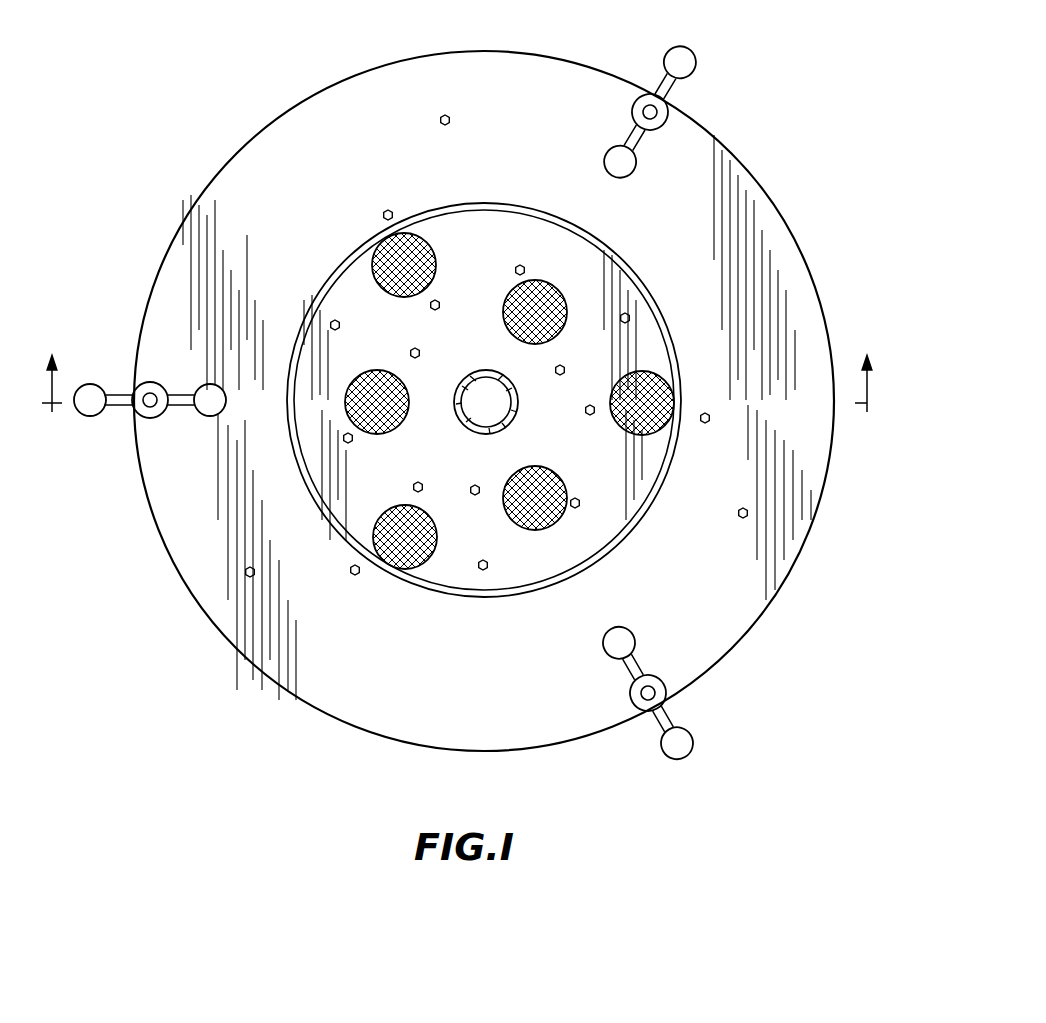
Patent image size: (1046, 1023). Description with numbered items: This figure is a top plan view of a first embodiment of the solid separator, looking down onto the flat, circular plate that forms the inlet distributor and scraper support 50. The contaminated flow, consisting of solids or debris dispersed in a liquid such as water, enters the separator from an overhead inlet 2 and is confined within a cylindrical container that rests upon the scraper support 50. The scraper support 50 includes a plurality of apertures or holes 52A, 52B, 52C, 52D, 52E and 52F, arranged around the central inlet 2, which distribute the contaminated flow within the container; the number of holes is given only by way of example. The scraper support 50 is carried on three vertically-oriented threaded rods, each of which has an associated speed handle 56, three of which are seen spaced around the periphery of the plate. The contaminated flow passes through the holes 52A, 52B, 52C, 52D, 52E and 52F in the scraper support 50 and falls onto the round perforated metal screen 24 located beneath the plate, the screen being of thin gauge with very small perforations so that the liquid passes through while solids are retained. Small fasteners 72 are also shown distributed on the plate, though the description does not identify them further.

The inlet distributor and scraper support 50 is at (172, 237).
The overhead inlet 2 is at (484, 370).
The round perforated metal screen 24 is at (643, 372).
The hole 52A is at (428, 238).
The hole 52B is at (552, 275).
The hole 52C is at (660, 440).
The hole 52D is at (548, 530).
The hole 52E is at (425, 570).
The hole 52F is at (388, 438).
The speed handle 56 is at (115, 415).
The fastener / nut 72 is at (450, 120).